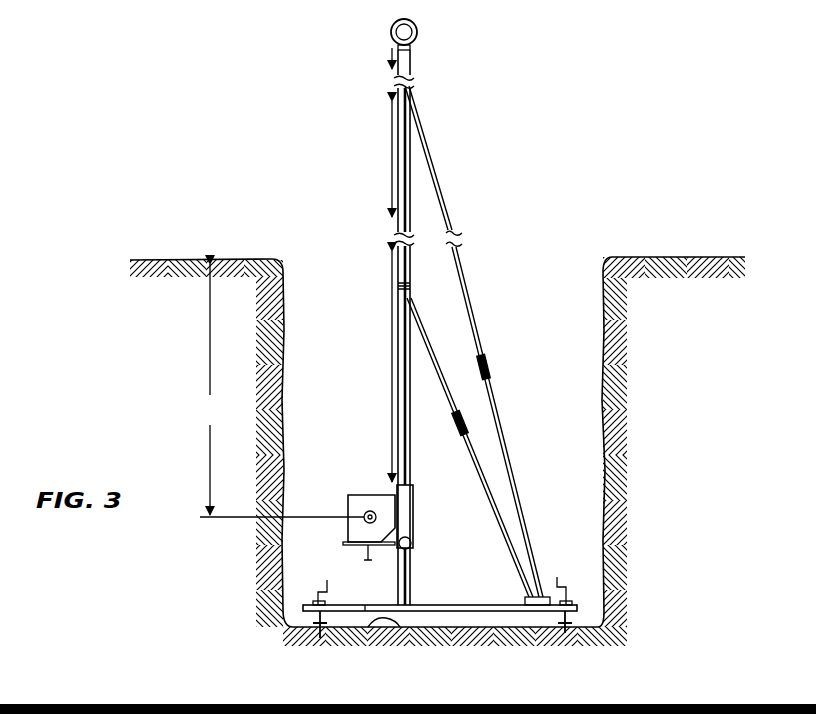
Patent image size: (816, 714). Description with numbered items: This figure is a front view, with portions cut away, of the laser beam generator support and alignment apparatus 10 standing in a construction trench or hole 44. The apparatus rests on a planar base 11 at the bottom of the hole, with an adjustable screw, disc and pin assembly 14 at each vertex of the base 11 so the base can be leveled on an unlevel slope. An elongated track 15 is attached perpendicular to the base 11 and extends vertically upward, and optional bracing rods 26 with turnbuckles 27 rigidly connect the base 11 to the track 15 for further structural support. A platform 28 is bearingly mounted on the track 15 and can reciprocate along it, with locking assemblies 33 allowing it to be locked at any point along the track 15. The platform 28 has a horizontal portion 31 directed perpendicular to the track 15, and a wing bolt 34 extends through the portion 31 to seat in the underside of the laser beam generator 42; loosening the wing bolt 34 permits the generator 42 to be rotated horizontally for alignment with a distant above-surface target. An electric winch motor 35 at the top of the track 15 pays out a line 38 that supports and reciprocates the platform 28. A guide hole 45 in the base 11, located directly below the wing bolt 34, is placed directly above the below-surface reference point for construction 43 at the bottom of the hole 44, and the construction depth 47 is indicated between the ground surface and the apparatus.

The laser beam generator support and alignment apparatus 10 is at (346, 137).
The planar base 11 is at (503, 600).
The adjustable screw, disc and pin assembly 14 is at (300, 598).
The elongated track 15 is at (420, 180).
The bracing rod 26 is at (459, 262).
The turnbuckle 27 is at (490, 363).
The platform 28 is at (397, 492).
The horizontal portion of platform 31 is at (352, 546).
The locking assembly 33 is at (411, 541).
The wing bolt 34 is at (356, 570).
The electric winch motor 35 is at (418, 30).
The line 38 is at (397, 345).
The laser beam generator 42 is at (357, 499).
The below-surface reference point for construction 43 is at (395, 631).
The construction trench or hole 44 is at (574, 262).
The guide hole 45 is at (366, 604).
The construction depth 47 is at (280, 390).